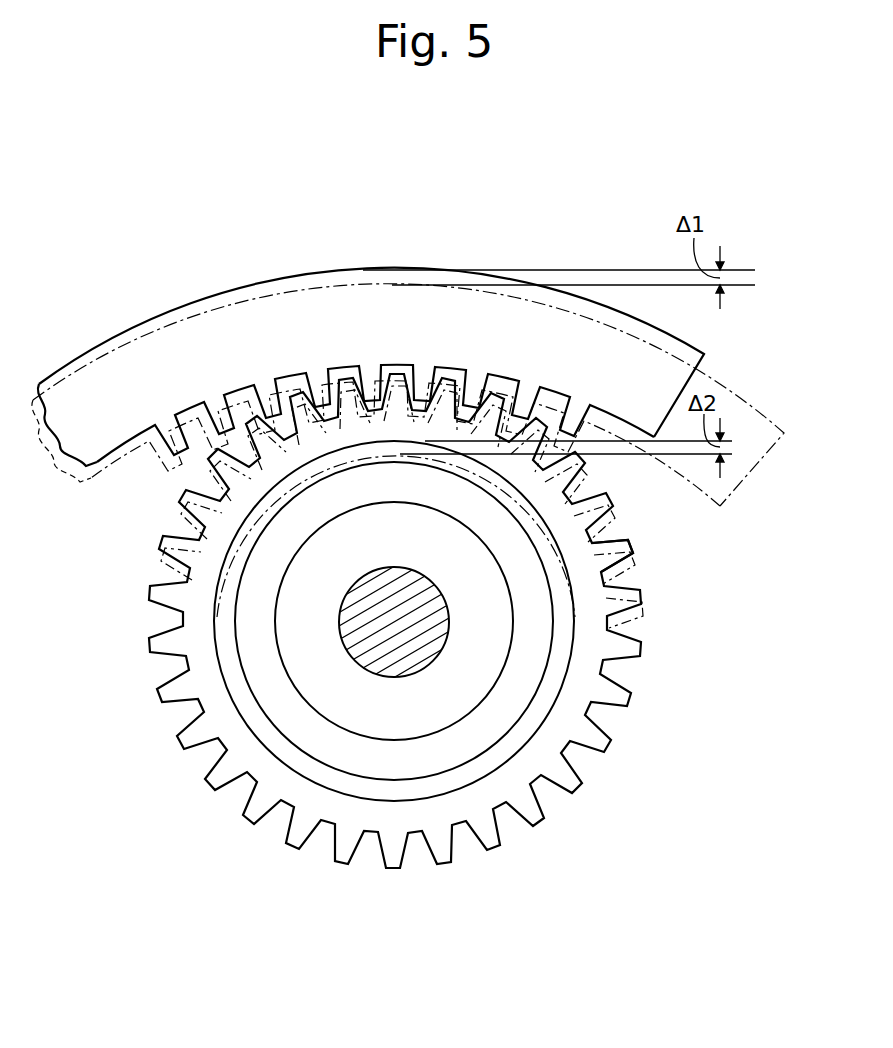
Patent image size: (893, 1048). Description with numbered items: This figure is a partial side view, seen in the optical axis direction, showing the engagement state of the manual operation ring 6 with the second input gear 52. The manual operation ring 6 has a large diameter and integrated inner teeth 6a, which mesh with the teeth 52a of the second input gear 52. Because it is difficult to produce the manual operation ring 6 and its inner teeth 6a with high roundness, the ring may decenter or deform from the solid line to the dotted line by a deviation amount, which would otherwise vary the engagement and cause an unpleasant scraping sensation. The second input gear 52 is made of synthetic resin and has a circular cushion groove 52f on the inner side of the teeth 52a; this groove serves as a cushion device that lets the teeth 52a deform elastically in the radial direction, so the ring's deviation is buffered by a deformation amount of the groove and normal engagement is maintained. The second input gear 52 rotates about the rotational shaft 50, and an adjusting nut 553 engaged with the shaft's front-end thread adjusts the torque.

The manual operation ring 6 is at (369, 288).
The inner teeth 6a is at (184, 448).
The second input gear 52 is at (598, 623).
The teeth 52a is at (616, 548).
The circular cushion groove 52f is at (552, 700).
The adjusting nut 553 is at (317, 670).
The rotational shaft 50 is at (412, 657).